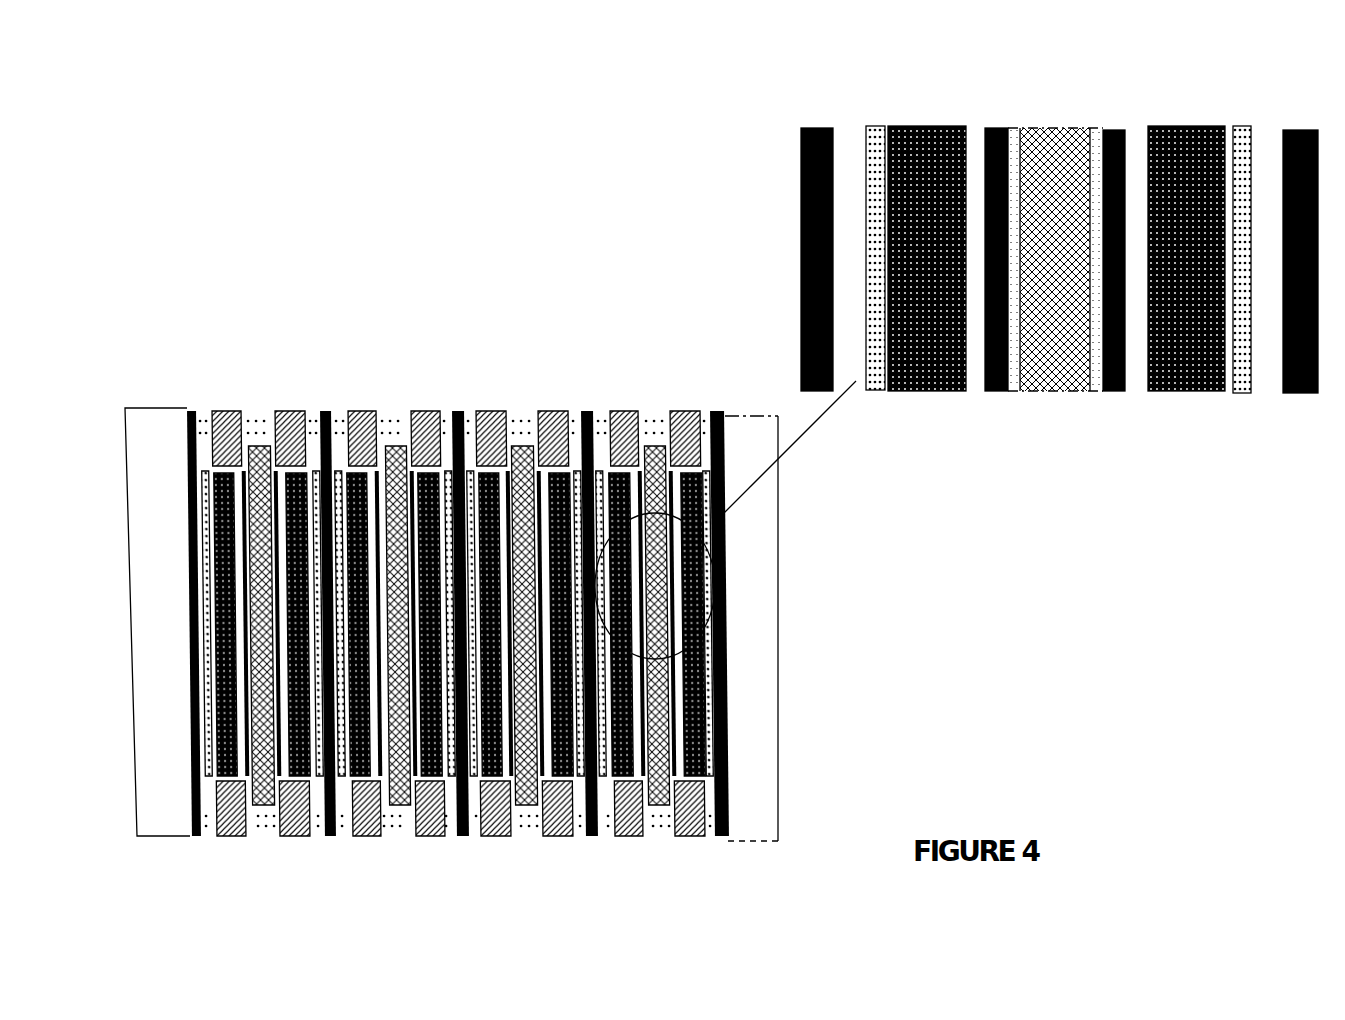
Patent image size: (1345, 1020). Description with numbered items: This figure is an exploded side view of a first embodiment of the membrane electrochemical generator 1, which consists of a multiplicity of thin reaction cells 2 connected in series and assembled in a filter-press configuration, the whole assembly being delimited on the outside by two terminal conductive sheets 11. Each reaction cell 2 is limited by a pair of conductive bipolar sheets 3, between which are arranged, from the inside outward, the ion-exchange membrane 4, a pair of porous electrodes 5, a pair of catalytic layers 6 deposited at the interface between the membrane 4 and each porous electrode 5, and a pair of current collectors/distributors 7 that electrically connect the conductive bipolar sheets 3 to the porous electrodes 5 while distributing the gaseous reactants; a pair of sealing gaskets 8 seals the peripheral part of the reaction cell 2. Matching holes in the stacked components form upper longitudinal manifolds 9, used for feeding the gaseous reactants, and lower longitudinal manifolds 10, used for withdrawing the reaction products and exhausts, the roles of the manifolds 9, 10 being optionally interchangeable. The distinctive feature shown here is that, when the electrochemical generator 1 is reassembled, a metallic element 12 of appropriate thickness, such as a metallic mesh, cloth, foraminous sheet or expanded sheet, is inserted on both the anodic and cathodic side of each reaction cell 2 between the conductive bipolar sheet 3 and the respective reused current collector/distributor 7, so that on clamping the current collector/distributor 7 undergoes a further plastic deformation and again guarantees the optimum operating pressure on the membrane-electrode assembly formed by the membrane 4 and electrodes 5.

The electrochemical generator 1 is at (1108, 25).
The reaction cell 2 is at (452, 838).
The conductive bipolar sheet 3 is at (182, 402).
The ion-exchange membrane 4 is at (255, 445).
The porous electrode 5 is at (990, 385).
The catalytic layer 6 is at (1011, 383).
The current collector/distributor 7 is at (607, 793).
The sealing gasket 8 is at (216, 402).
The upper longitudinal manifold 9 is at (257, 417).
The lower longitudinal manifold 10 is at (468, 813).
The terminal conductive sheet 11 is at (145, 483).
The metallic element 12 is at (313, 768).